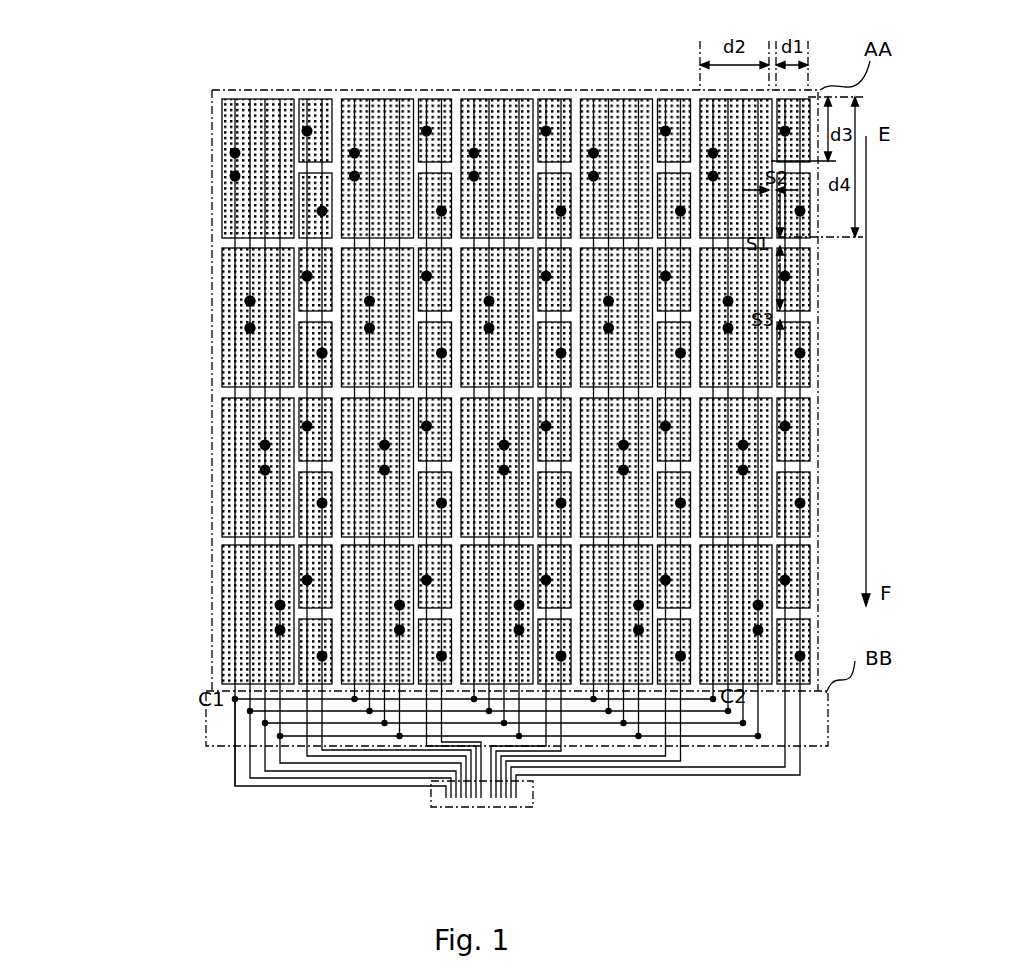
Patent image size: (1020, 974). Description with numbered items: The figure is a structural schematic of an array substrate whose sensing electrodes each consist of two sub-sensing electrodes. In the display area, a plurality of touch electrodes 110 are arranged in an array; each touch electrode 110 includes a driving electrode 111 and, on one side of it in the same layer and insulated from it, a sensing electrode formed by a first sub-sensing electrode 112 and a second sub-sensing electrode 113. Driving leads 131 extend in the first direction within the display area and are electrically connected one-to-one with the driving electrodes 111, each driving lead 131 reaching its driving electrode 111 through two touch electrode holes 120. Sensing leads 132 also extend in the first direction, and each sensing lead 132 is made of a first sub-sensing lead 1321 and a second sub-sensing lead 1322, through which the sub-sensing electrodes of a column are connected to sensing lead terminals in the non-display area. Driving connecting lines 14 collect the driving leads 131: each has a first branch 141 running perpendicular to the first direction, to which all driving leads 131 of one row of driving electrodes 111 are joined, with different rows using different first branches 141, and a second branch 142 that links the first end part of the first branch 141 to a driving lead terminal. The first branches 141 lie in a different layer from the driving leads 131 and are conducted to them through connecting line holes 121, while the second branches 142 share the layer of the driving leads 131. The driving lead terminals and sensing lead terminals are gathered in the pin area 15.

The touch electrode 110 is at (185, 168).
The driving electrode 111 is at (216, 109).
The first sub-sensing electrode 112 is at (290, 140).
The second sub-sensing electrode 113 is at (290, 207).
The touch electrode hole 120 is at (313, 345).
The connecting line hole 121 is at (225, 694).
The driving lead 131 is at (272, 450).
The sensing lead 132 is at (253, 448).
The first sub-sensing lead 1321 is at (297, 480).
The second sub-sensing lead 1322 is at (313, 510).
The driving connecting line 14 is at (459, 796).
The first branch 141 is at (240, 693).
The second branch 142 is at (229, 705).
The pin area 15 is at (502, 800).